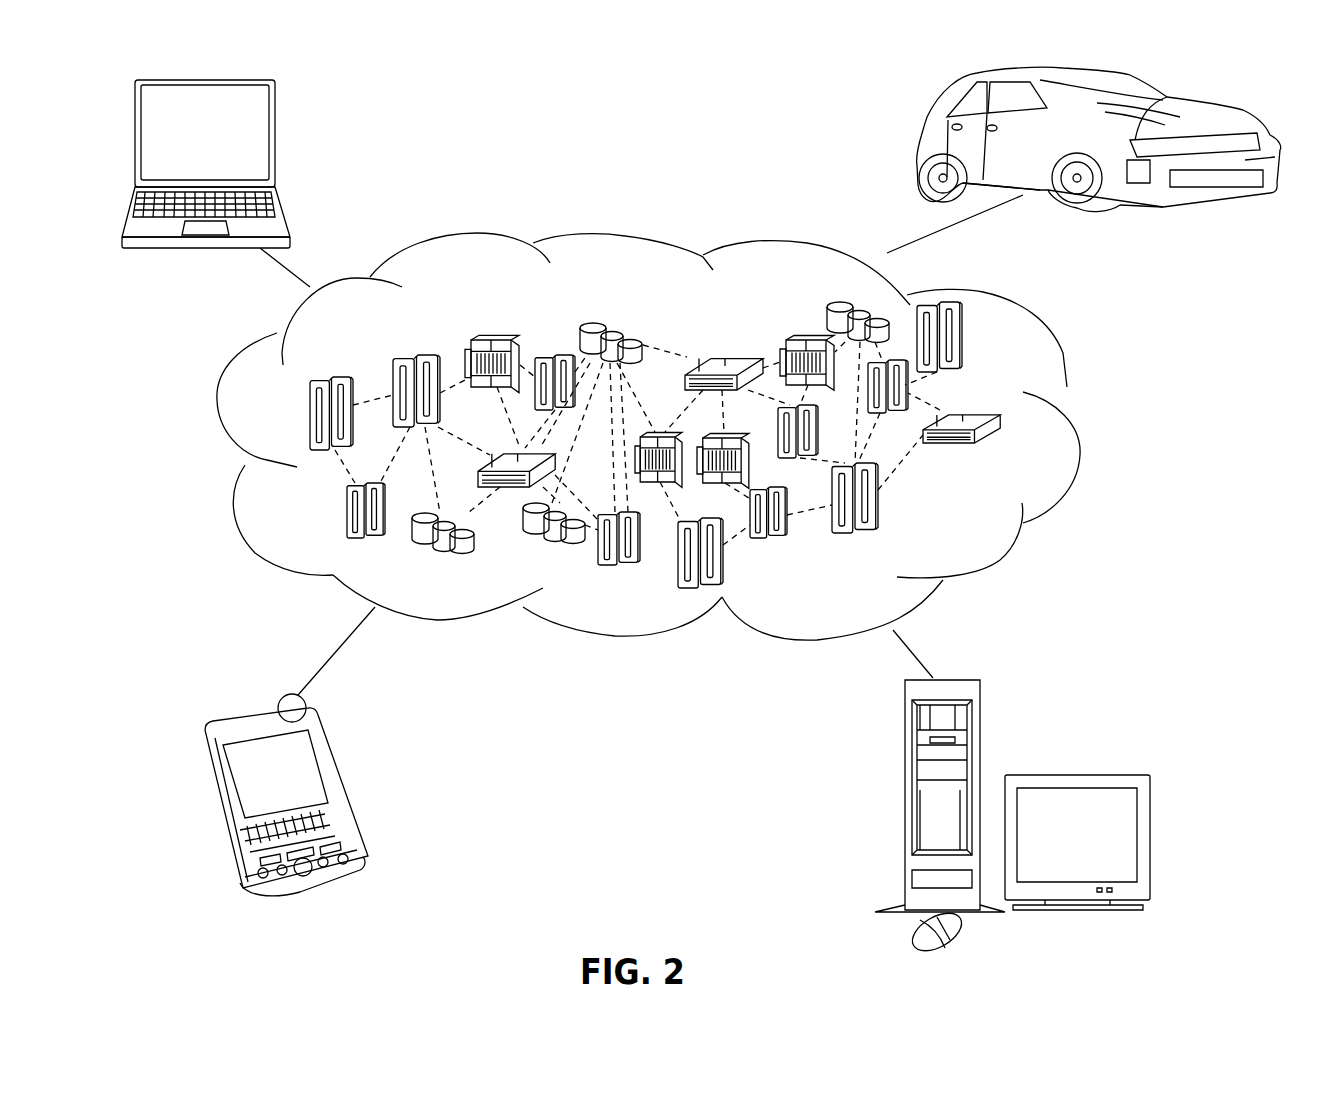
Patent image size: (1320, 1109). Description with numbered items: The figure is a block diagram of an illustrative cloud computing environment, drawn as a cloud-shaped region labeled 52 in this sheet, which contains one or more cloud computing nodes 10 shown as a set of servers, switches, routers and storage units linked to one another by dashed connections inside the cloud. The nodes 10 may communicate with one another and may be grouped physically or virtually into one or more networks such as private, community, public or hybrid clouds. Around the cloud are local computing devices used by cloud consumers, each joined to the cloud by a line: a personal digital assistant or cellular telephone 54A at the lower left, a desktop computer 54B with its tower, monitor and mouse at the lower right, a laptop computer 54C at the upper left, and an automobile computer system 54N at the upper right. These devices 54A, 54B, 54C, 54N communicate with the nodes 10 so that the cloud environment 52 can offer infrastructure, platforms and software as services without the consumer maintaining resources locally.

The cloud computing nodes 10 is at (979, 526).
The cloud computing environment 52 is at (1074, 428).
The personal digital assistant or cellular telephone 54A is at (333, 758).
The desktop computer 54B is at (904, 742).
The laptop computer 54C is at (277, 117).
The automobile computer system 54N is at (922, 137).